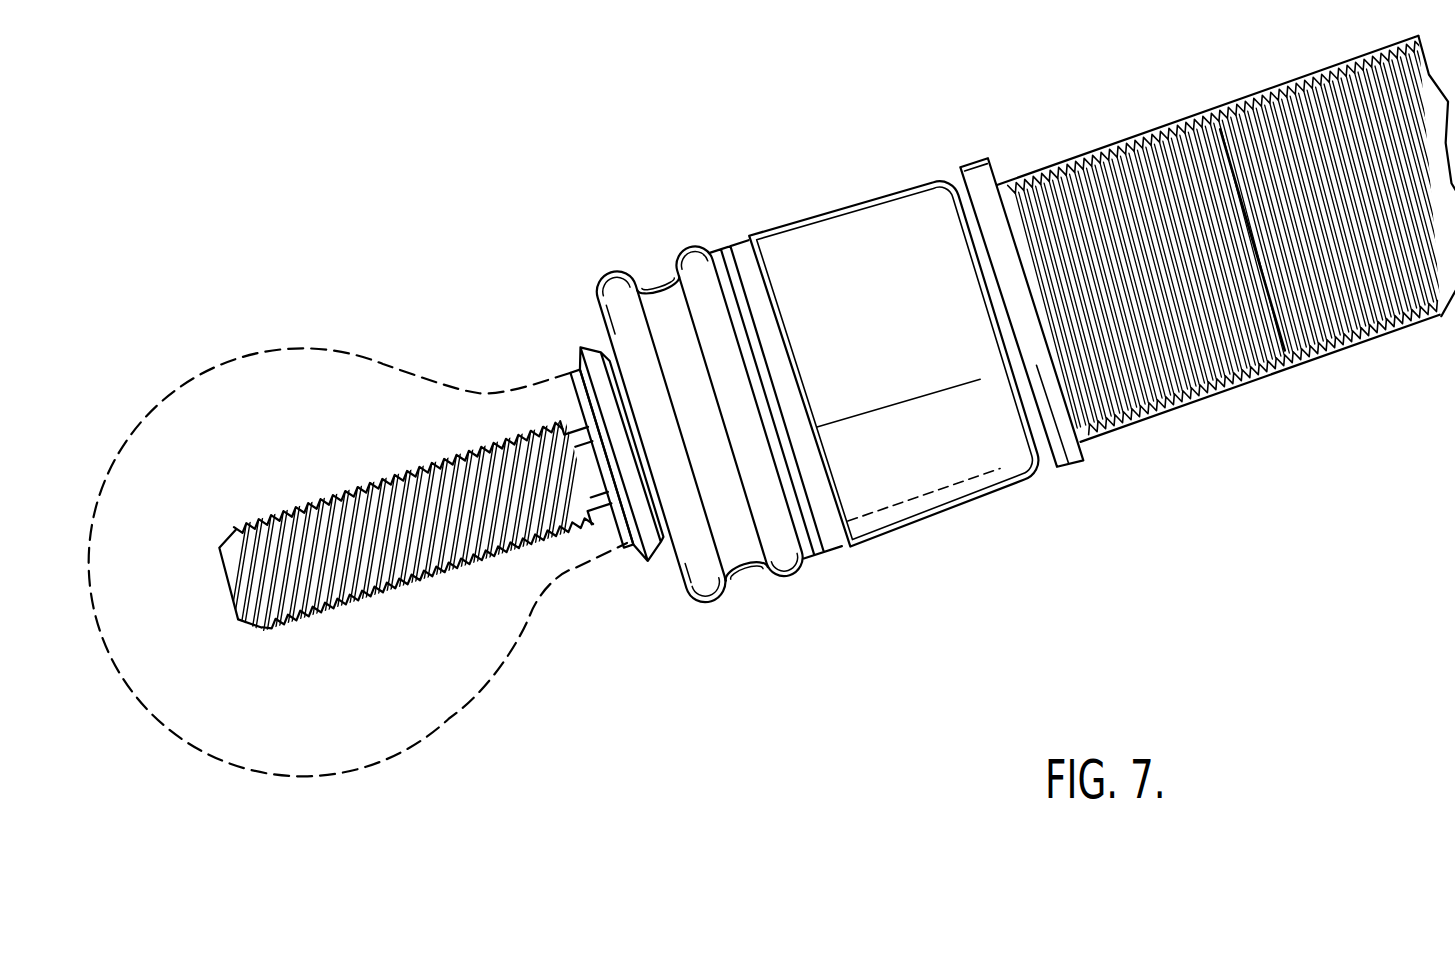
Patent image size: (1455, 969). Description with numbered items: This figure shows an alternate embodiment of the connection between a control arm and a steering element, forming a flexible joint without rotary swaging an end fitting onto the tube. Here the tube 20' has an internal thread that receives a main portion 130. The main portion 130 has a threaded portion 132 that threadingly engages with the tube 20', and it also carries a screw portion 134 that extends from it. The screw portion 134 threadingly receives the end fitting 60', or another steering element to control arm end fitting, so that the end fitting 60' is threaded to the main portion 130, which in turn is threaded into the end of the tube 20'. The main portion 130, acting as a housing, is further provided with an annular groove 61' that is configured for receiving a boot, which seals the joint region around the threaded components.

The screw portion 134 is at (368, 478).
The annular groove 61' is at (562, 469).
The end fitting 60' is at (358, 584).
The main portion 130 is at (971, 514).
The threaded portion 132 is at (1142, 410).
The tube 20' is at (1222, 253).